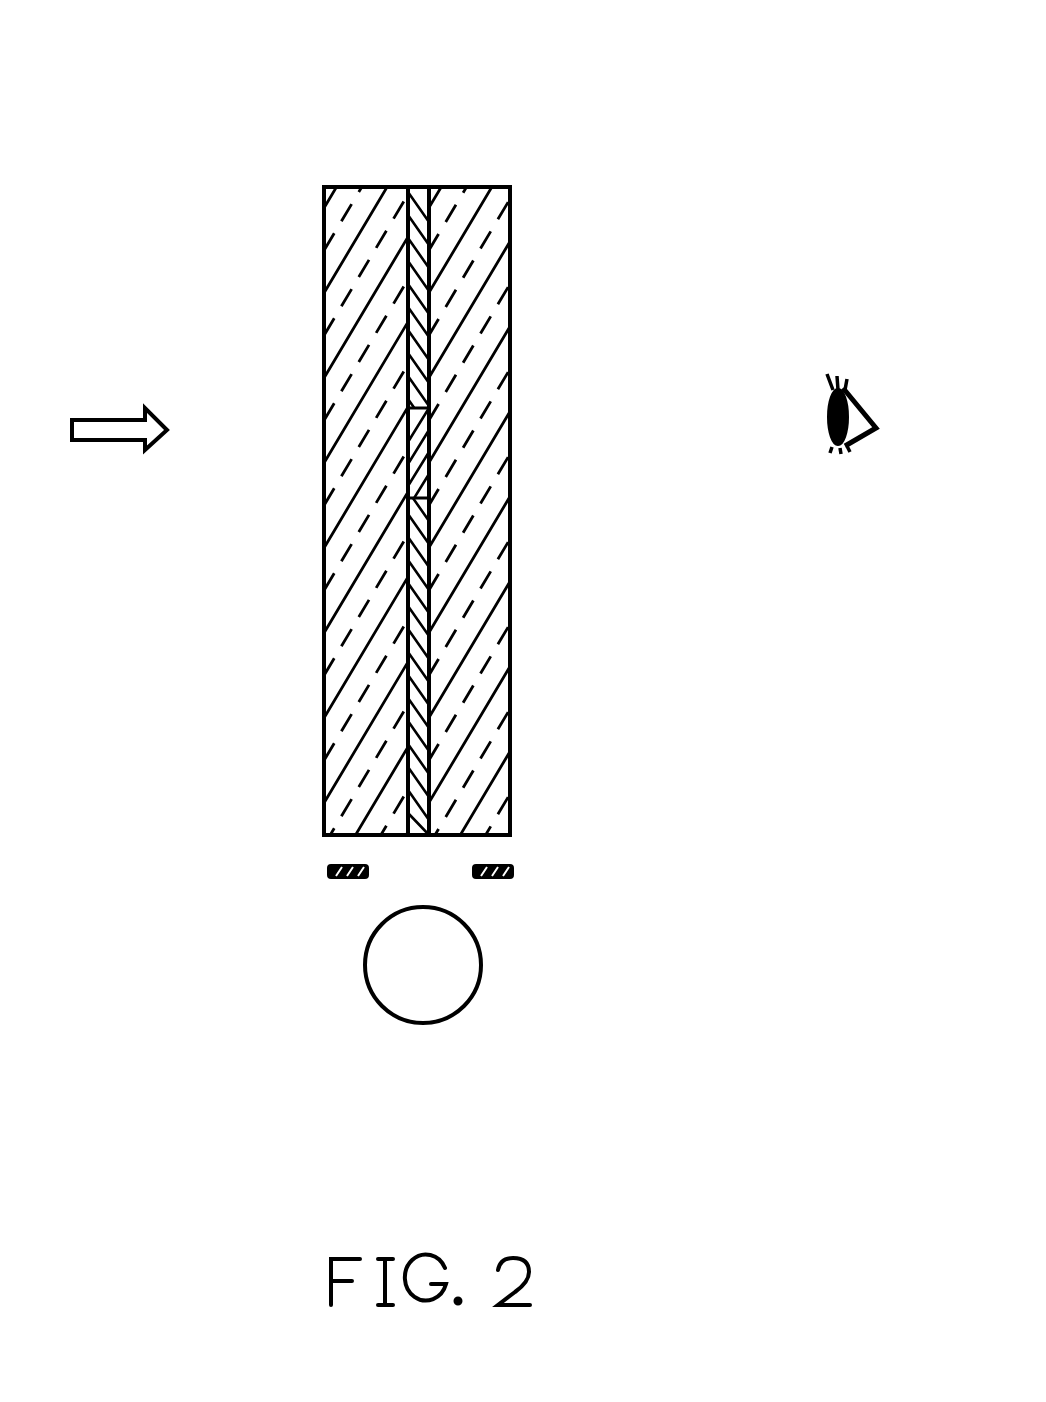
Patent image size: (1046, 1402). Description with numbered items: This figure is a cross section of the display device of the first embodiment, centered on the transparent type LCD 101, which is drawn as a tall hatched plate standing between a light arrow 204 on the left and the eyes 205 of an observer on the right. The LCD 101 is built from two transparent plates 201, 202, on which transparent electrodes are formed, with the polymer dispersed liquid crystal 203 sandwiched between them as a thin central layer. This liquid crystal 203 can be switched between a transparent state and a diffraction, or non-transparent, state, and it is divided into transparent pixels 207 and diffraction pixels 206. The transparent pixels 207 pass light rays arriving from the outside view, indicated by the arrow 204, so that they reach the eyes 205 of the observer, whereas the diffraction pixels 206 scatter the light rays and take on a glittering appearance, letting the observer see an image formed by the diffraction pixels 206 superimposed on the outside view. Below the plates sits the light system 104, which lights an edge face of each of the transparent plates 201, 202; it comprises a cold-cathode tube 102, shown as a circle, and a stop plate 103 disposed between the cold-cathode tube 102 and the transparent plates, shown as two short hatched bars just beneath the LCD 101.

The transparent type LCD 101 is at (513, 76).
The cold-cathode tube 102 is at (465, 973).
The stop plate 103 is at (513, 871).
The light system 104 is at (662, 848).
The transparent plate 201 is at (498, 684).
The transparent plate 202 is at (343, 692).
The polymer dispersed liquid crystal 203 is at (416, 187).
The incident light 204 is at (103, 420).
The eyes of an observer 205 is at (862, 393).
The diffraction pixels 206 is at (428, 440).
The transparent pixels 207 is at (429, 292).